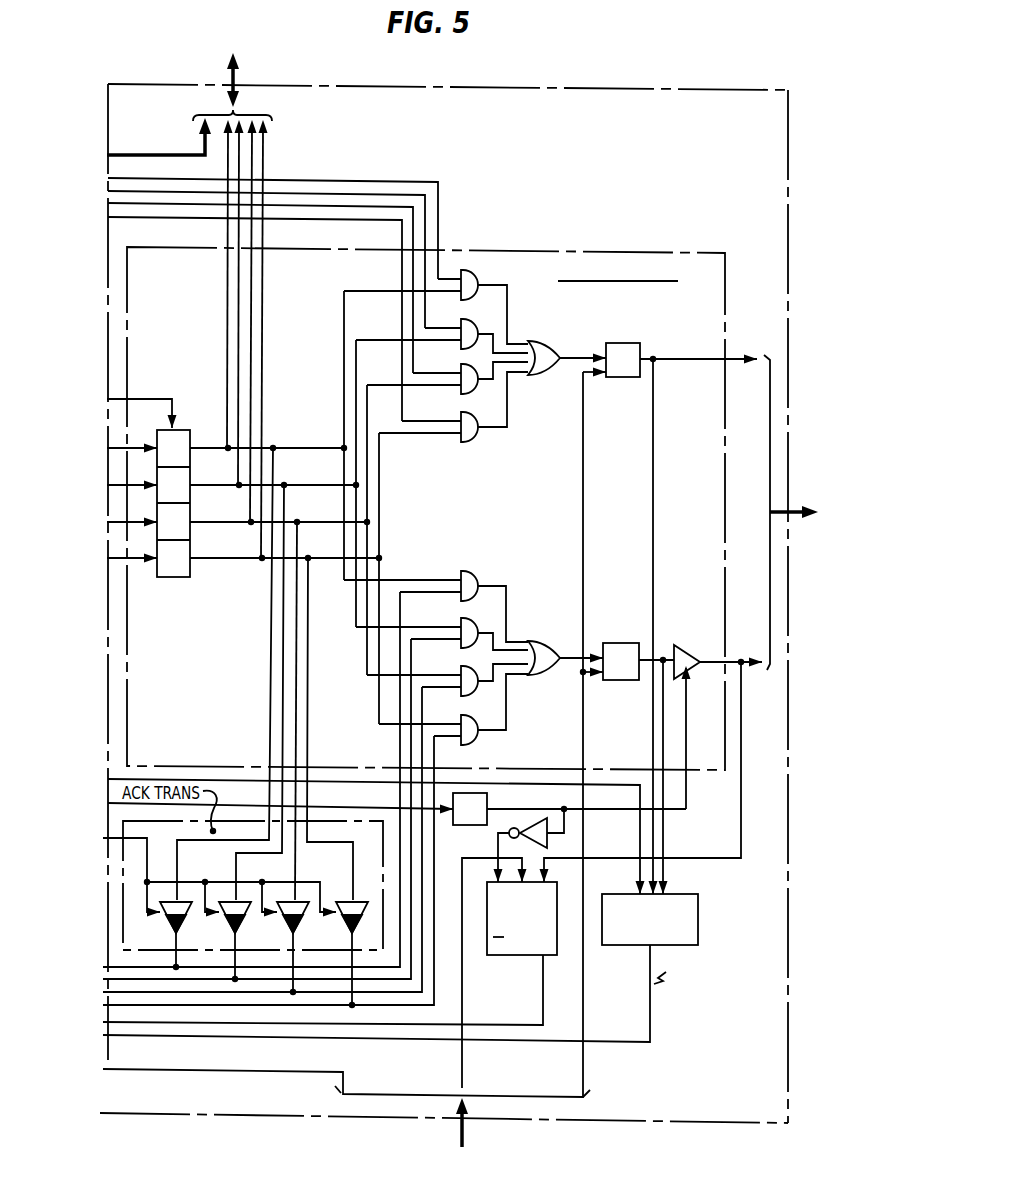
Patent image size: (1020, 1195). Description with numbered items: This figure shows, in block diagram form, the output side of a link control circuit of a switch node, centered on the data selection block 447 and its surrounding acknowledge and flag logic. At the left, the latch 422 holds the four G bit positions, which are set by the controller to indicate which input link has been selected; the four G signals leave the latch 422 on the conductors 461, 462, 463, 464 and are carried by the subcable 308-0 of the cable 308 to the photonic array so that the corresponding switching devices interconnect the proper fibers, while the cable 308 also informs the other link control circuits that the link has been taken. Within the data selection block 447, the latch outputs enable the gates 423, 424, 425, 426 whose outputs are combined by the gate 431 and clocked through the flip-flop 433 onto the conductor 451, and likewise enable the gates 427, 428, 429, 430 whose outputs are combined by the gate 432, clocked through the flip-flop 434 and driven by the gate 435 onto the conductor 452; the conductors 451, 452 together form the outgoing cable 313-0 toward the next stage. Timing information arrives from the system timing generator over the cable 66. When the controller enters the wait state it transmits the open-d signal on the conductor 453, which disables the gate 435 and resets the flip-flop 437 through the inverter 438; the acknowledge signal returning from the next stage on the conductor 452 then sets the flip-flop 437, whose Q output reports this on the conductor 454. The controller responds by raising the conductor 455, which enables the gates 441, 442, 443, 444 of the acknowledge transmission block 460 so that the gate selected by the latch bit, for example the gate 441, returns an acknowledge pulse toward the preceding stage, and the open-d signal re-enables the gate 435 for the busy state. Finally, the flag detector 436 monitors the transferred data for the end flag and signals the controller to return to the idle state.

The cable 308 is at (236, 77).
The subcable 308-0 is at (266, 148).
The outgoing cable 313-0 is at (796, 510).
The cable 66 is at (465, 1146).
The latch 422 is at (172, 580).
The gate 423 is at (484, 273).
The gate 424 is at (470, 322).
The gate 425 is at (473, 393).
The gate 426 is at (469, 441).
The gate 427 is at (474, 572).
The gate 428 is at (473, 623).
The gate 429 is at (471, 695).
The gate 430 is at (470, 741).
The gate 431 is at (545, 352).
The gate 432 is at (540, 652).
The flip-flop 433 is at (623, 343).
The flip-flop 434 is at (621, 643).
The gate 435 is at (688, 645).
The flag detector 436 is at (684, 896).
The flip-flop 437 is at (518, 955).
The inverter 438 is at (572, 840).
The gate 441 is at (165, 921).
The gate 442 is at (227, 921).
The gate 443 is at (284, 921).
The gate 444 is at (347, 921).
The data selection block 447 is at (595, 250).
The conductor 451 is at (685, 359).
The conductor 452 is at (742, 661).
The conductor 453 is at (500, 812).
The conductor 454 is at (543, 1002).
The conductor 455 is at (140, 838).
The acknowledge transmission block 460 is at (325, 830).
The conductor 461 is at (287, 448).
The conductor 462 is at (292, 486).
The conductor 463 is at (316, 521).
The conductor 464 is at (317, 558).